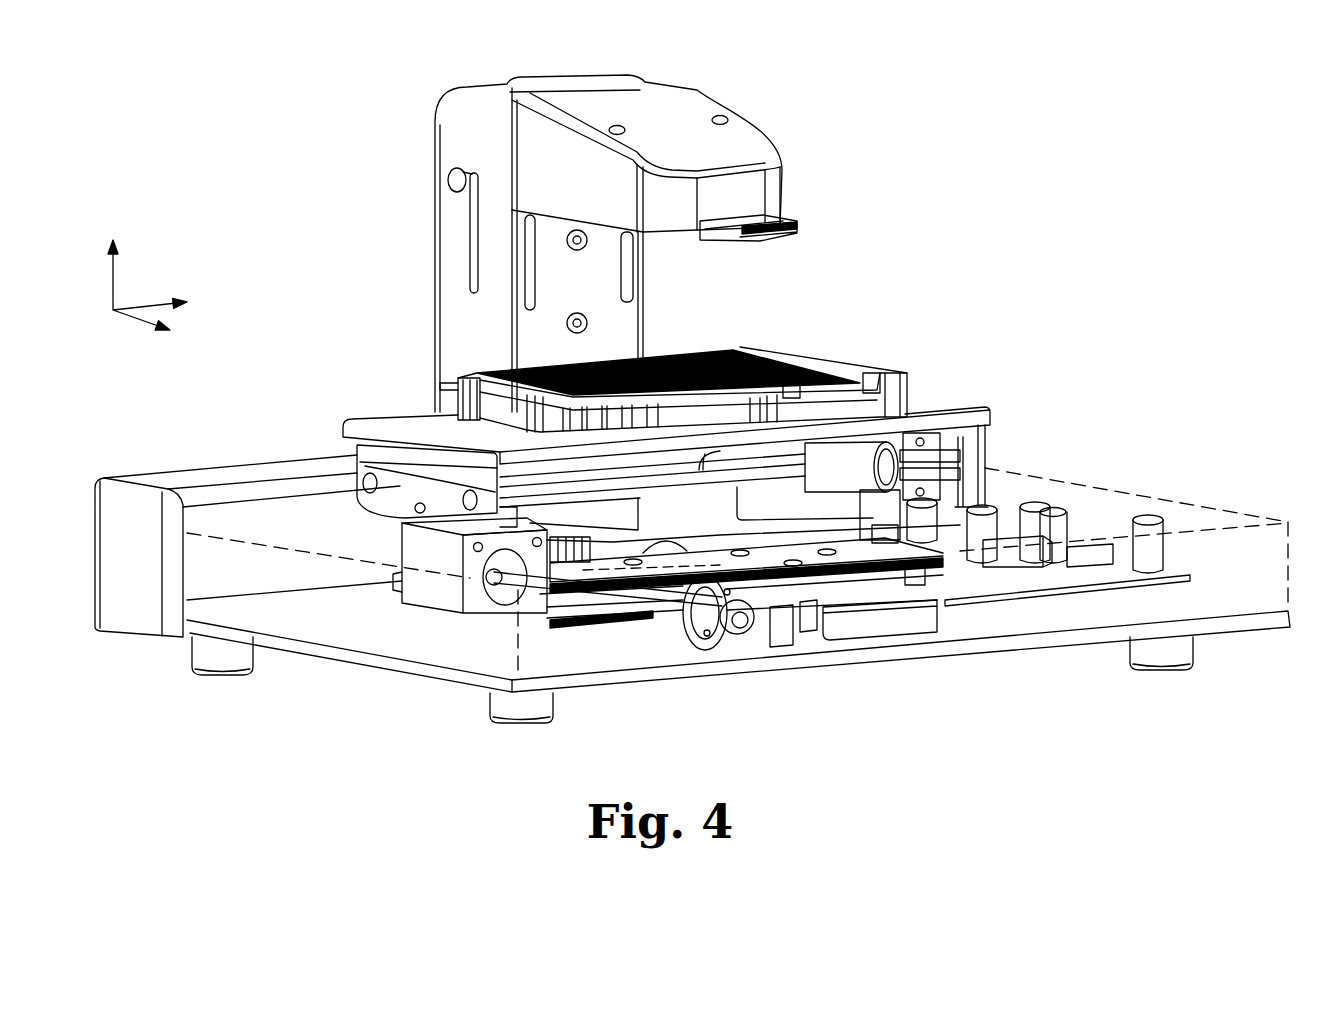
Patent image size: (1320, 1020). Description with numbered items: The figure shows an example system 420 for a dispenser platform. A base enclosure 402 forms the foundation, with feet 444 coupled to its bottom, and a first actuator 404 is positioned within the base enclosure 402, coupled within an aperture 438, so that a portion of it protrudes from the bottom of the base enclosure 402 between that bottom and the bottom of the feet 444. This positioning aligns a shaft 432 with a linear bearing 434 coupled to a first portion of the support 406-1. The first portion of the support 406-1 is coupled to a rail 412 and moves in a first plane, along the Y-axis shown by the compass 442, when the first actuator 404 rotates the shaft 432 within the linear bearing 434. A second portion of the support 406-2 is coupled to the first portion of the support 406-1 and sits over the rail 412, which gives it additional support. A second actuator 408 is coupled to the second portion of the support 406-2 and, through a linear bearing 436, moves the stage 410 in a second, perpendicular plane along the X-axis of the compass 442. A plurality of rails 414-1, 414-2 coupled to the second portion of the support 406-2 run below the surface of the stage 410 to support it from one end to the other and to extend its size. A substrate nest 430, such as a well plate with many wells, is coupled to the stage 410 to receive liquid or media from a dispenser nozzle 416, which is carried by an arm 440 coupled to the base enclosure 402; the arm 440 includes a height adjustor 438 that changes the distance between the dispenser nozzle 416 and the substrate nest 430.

The base enclosure 402 is at (317, 618).
The first actuator 404 is at (434, 595).
The first portion of the support 406-1 is at (913, 575).
The second portion of the support 406-2 is at (877, 528).
The second actuator 408 is at (958, 503).
The stage 410 is at (968, 420).
The rail 412 is at (887, 623).
The rail 414-1 is at (358, 455).
The rail 414-2 is at (527, 477).
The dispenser nozzle 416 is at (805, 238).
The system 420 is at (692, 430).
The substrate nest 430 is at (797, 358).
The shaft 432 is at (650, 605).
The linear bearing 434 is at (733, 642).
The linear bearing 436 is at (873, 467).
The height adjustor 438 is at (437, 233).
The arm 440 is at (727, 157).
The compass 442 is at (110, 322).
The feet 444 is at (522, 703).